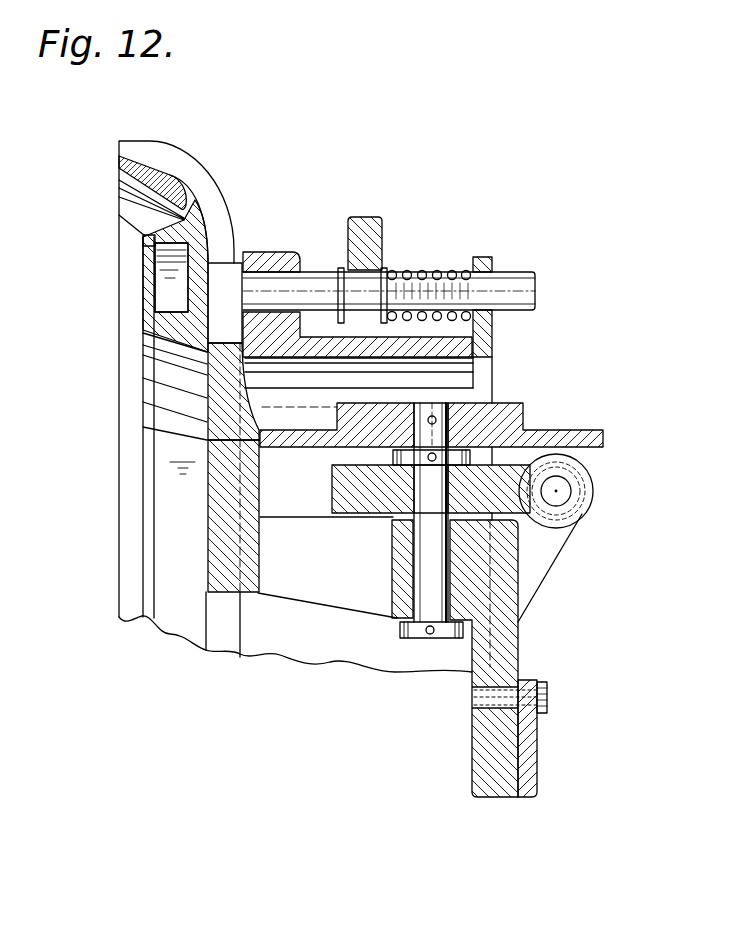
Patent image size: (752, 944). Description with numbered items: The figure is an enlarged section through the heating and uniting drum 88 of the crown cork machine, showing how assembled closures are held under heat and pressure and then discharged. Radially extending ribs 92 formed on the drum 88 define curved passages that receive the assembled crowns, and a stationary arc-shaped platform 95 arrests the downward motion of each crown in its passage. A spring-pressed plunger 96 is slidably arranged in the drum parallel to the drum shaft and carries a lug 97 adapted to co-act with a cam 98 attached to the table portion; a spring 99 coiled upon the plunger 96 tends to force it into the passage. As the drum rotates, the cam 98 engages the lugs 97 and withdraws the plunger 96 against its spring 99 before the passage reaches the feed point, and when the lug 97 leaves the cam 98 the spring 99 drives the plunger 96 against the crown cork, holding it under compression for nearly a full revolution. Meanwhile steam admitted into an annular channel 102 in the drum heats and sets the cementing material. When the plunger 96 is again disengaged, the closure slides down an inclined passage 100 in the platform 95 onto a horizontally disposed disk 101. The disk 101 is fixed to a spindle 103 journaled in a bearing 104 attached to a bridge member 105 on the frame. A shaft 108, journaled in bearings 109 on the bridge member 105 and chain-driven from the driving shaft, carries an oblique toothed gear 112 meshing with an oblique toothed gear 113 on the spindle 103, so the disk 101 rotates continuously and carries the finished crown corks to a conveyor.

The heating and uniting drum 88 is at (125, 157).
The radially extending ribs 92 is at (215, 203).
The stationary arc-shaped platform 95 is at (222, 343).
The spring-pressed plunger 96 is at (318, 272).
The lug 97 is at (340, 268).
The cam 98 is at (368, 222).
The spring 99 is at (438, 271).
The inclined passage 100 is at (253, 407).
The horizontally disposed disk 101 is at (568, 432).
The annular channel 102 is at (165, 297).
The spindle 103 is at (420, 560).
The bearing 104 is at (518, 646).
The bridge member 105 is at (530, 759).
The shaft 108 is at (565, 495).
The bearing 109 is at (580, 515).
The oblique toothed gear 112 is at (587, 482).
The oblique toothed gear 113 is at (332, 490).